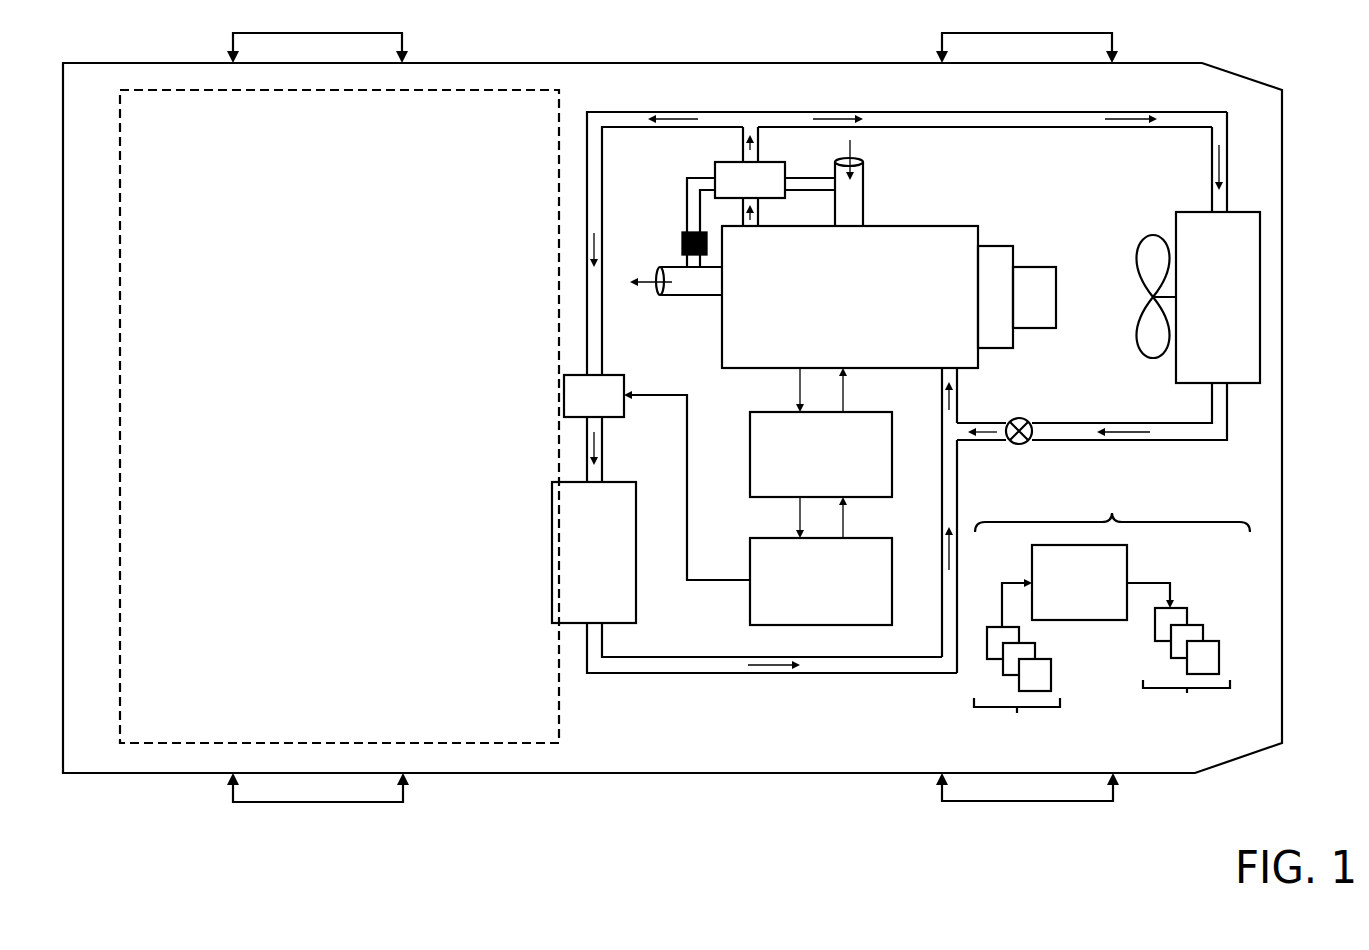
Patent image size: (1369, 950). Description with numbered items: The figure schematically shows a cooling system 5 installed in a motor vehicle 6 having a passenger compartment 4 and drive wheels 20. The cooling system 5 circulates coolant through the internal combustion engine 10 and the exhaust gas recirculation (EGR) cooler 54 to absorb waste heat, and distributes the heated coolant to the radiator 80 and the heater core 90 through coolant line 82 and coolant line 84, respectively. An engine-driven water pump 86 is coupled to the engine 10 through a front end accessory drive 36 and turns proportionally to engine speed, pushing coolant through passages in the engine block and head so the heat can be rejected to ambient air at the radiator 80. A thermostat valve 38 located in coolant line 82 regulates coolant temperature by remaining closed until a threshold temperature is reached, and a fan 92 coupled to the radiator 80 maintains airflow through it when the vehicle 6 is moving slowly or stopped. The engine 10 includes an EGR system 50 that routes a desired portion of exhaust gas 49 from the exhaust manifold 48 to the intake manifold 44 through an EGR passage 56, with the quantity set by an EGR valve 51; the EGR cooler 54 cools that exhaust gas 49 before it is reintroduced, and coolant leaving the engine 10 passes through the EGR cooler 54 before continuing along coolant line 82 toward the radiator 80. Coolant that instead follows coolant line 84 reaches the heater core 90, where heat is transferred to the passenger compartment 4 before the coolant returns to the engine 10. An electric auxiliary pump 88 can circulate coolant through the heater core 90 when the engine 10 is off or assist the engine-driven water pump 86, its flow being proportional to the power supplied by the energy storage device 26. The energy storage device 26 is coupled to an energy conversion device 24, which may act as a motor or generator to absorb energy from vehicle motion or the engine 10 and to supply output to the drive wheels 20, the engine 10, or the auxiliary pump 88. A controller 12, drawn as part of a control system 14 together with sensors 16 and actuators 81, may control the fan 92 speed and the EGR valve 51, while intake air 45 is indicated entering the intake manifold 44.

The passenger compartment 4 is at (339, 416).
The cooling system 5 is at (1243, 146).
The motor vehicle 6 is at (600, 63).
The internal combustion engine 10 is at (850, 297).
The controller 12 is at (1079, 582).
The control system 14 is at (1112, 497).
The sensors 16 is at (1017, 671).
The drive wheels 20 is at (318, 33).
The energy conversion device 24 is at (821, 432).
The energy storage device 26 is at (758, 508).
The front end accessory drive 36 is at (997, 245).
The thermostat valve 38 is at (1025, 420).
The intake manifold 44 is at (865, 200).
The intake air 45 is at (852, 150).
The exhaust manifold 48 is at (697, 297).
The exhaust gas 49 is at (660, 284).
The exhaust gas recirculation system 50 is at (664, 177).
The EGR valve 51 is at (682, 243).
The EGR cooler 54 is at (750, 176).
The EGR passage 56 is at (793, 177).
The radiator 80 is at (1218, 297).
The actuators 81 is at (1187, 662).
The coolant line 82 is at (1030, 112).
The coolant line 84 is at (673, 112).
The engine-driven water pump 86 is at (1034, 297).
The electric auxiliary pump 88 is at (594, 396).
The heater core 90 is at (594, 520).
The fan 92 is at (1140, 258).